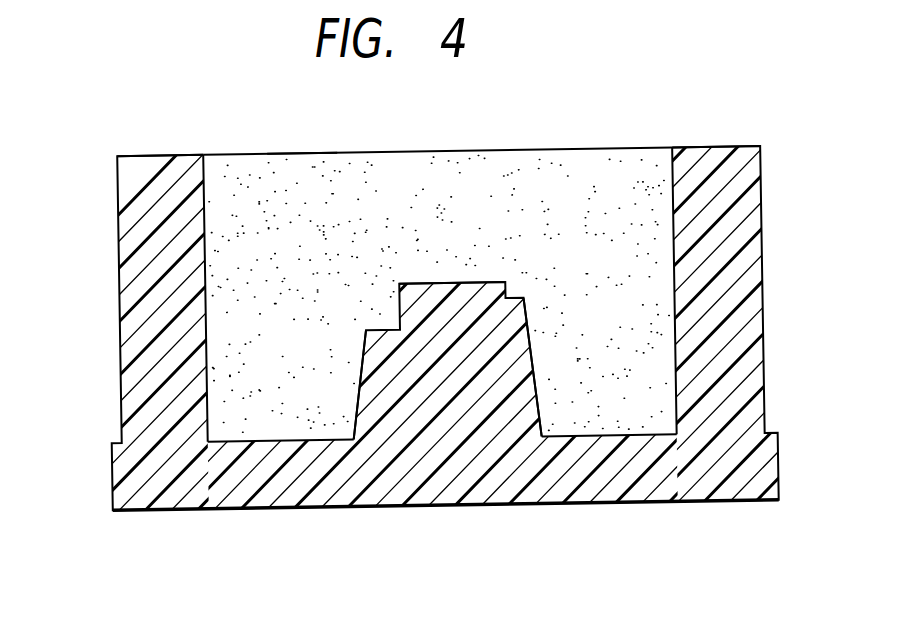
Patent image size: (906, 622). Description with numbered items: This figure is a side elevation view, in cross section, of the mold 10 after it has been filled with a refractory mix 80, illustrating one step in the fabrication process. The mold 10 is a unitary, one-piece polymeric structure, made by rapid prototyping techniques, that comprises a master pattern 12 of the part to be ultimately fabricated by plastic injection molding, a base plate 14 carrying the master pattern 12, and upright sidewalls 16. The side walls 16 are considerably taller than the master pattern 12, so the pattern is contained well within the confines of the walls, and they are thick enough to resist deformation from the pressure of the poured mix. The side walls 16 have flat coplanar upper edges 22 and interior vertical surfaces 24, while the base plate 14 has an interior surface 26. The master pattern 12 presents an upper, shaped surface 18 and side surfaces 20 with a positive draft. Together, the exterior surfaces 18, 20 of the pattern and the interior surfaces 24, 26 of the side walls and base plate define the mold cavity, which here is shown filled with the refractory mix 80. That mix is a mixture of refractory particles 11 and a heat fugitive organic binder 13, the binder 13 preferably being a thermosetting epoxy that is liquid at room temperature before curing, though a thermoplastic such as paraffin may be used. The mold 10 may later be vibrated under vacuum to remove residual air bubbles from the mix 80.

The mold 10 is at (453, 331).
The refractory particles 11 is at (407, 153).
The master pattern 12 is at (447, 323).
The heat fugitive organic binder 13 is at (287, 170).
The base plate 14 is at (568, 504).
The upright sidewalls 16 is at (131, 247).
The upper shaped surface 18 is at (433, 281).
The side surfaces 20 is at (359, 369).
The upper edges 22 is at (159, 154).
The interior vertical surfaces 24 is at (207, 252).
The interior surface 26 is at (598, 432).
The refractory mix 80 is at (368, 215).